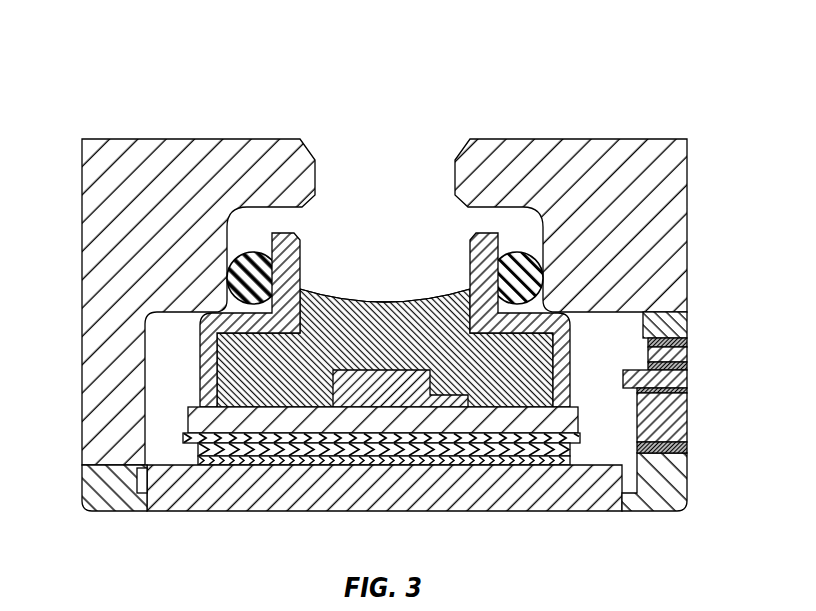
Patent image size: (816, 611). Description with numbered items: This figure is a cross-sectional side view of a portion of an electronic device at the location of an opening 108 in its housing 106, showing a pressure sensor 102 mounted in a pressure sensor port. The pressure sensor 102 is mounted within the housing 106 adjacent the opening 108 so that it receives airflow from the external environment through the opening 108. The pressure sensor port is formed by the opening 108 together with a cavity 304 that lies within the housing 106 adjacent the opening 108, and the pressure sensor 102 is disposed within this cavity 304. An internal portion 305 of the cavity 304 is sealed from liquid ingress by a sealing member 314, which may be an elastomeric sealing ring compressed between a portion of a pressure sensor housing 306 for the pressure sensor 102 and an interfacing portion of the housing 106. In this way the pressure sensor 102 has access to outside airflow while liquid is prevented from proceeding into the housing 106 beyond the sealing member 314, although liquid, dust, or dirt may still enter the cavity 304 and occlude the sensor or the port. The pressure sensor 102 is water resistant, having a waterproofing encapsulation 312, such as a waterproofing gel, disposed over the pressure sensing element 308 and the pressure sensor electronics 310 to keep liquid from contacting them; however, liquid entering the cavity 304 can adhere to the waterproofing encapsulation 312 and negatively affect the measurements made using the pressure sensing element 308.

The pressure sensor 102 is at (583, 332).
The housing 106 is at (144, 161).
The opening 108 is at (382, 109).
The cavity 304 is at (423, 243).
The internal portion of the cavity 305 is at (611, 407).
The pressure sensor housing 306 is at (193, 371).
The pressure sensing element 308 is at (385, 385).
The pressure sensor electronics 310 is at (213, 420).
The waterproofing encapsulation 312 is at (515, 390).
The sealing member 314 is at (250, 282).